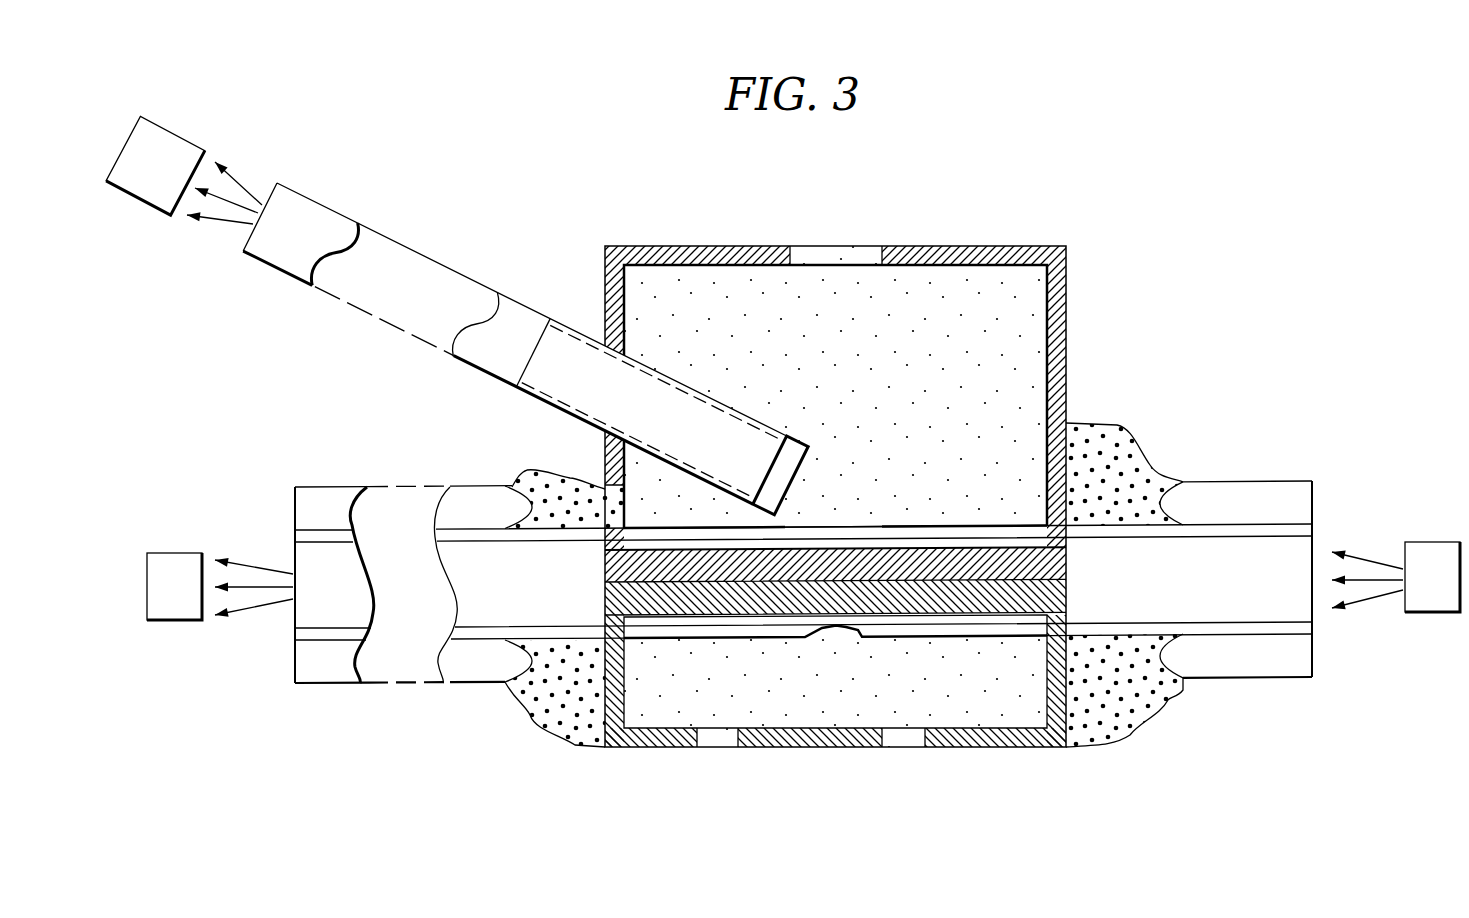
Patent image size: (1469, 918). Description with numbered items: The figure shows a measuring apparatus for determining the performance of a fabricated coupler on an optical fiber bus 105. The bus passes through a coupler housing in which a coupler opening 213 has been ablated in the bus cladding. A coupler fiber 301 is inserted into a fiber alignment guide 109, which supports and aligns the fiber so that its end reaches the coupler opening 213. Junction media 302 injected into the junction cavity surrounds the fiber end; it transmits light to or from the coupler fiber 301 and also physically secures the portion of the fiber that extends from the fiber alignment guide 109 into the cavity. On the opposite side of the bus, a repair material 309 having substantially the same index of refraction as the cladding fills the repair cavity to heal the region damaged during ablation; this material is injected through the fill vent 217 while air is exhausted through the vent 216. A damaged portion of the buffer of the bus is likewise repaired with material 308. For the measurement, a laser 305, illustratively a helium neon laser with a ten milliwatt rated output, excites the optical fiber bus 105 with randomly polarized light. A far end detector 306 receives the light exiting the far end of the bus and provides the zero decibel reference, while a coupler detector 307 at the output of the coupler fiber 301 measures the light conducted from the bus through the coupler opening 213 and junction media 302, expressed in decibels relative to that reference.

The coupler detector 307 is at (172, 137).
The coupler fiber 301 is at (525, 344).
The junction media 302 is at (905, 312).
The coupler opening 213 is at (830, 523).
The material 308 is at (1107, 433).
The optical fiber bus 105 is at (1253, 492).
The fiber alignment guide 109 is at (567, 425).
The far end detector 306 is at (147, 590).
The laser 305 is at (1396, 605).
The vent 216 is at (728, 737).
The fill vent 217 is at (888, 748).
The repair material 309 is at (1000, 708).